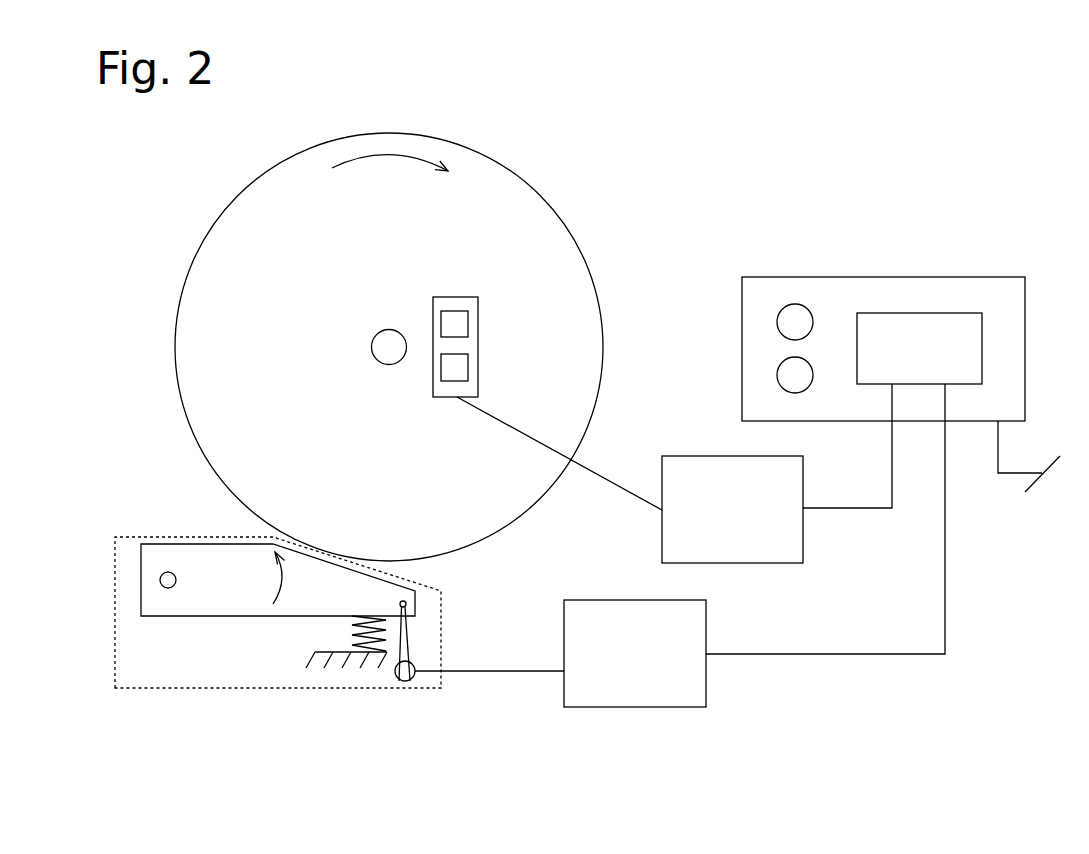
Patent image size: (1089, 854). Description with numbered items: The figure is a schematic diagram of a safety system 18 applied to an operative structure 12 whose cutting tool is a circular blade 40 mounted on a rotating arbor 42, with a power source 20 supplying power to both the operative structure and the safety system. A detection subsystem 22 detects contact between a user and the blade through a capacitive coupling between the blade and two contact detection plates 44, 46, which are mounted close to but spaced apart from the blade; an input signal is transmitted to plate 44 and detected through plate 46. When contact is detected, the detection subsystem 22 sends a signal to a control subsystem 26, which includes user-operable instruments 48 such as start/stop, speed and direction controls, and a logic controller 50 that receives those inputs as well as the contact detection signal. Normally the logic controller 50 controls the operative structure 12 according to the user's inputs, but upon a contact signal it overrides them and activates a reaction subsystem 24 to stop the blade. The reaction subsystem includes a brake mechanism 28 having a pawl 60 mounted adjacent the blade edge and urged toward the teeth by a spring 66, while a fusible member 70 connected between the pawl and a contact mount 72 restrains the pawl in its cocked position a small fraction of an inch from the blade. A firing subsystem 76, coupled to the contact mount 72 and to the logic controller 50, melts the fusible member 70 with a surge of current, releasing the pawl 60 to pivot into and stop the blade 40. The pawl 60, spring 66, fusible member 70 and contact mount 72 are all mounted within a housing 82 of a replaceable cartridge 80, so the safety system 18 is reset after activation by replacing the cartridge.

The operative structure 12 is at (590, 146).
The safety system 18 is at (849, 270).
The power source 20 is at (1031, 468).
The detection subsystem 22 is at (752, 494).
The reaction subsystem 24 is at (680, 586).
The control subsystem 26 is at (849, 324).
The brake mechanism 28 is at (299, 610).
The circular blade 40 is at (279, 233).
The arbor 42 is at (380, 352).
The contact detection plate 44 is at (463, 321).
The contact detection plate 46 is at (463, 366).
The instruments 48 is at (787, 320).
The logic controller 50 is at (930, 352).
The pawl 60 is at (190, 553).
The spring 66 is at (326, 633).
The fusible member 70 is at (412, 652).
The contact mount 72 is at (402, 679).
The firing subsystem 76 is at (655, 639).
The replaceable cartridge 80 is at (285, 631).
The housing 82 is at (202, 690).